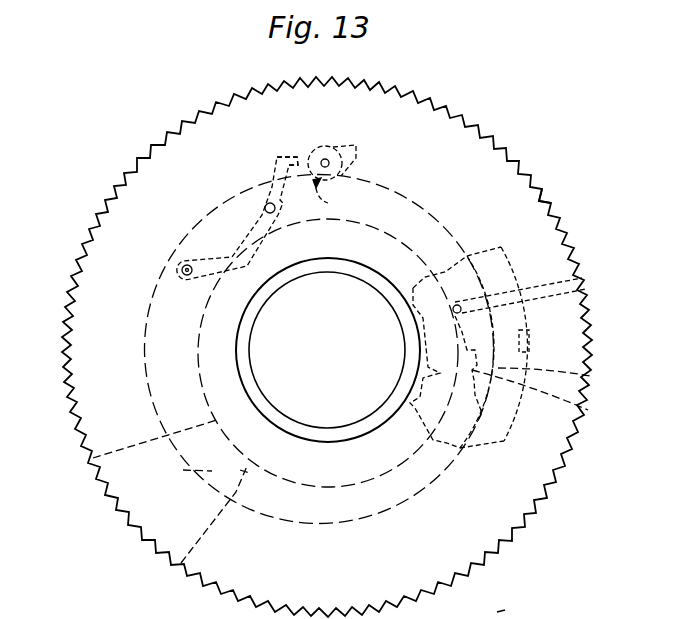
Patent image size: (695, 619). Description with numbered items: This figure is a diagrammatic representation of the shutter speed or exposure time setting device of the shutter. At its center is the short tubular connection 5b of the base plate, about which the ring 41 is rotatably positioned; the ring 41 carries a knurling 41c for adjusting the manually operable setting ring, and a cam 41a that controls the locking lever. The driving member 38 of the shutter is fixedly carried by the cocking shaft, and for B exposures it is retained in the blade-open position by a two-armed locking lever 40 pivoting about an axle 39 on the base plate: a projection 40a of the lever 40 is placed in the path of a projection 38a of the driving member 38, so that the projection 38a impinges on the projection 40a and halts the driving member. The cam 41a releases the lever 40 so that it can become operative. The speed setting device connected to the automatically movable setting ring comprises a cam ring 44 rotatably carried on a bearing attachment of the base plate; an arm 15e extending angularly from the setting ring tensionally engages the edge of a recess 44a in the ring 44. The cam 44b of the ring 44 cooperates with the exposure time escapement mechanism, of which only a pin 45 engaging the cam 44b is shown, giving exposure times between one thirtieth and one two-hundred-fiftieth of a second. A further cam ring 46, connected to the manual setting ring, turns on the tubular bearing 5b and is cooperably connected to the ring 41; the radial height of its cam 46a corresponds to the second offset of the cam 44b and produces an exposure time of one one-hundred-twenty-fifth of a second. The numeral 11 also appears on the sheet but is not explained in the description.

The ring 41 is at (93, 352).
The cam 41a is at (146, 297).
The knurling 41c is at (547, 202).
The short tubular connection 5b is at (352, 262).
The driving member 38 is at (343, 152).
The projection 38a is at (339, 198).
The axle 39 is at (267, 203).
The two-armed locking lever 40 is at (250, 218).
The projection 40a is at (290, 156).
The pin 45 is at (576, 278).
The arm 15e is at (530, 338).
The cam ring 44 is at (503, 435).
The recess 44a is at (590, 376).
The cam 44b is at (588, 410).
The cam ring 46 is at (93, 458).
The cam 46a is at (183, 563).
The frame 11 is at (512, 610).